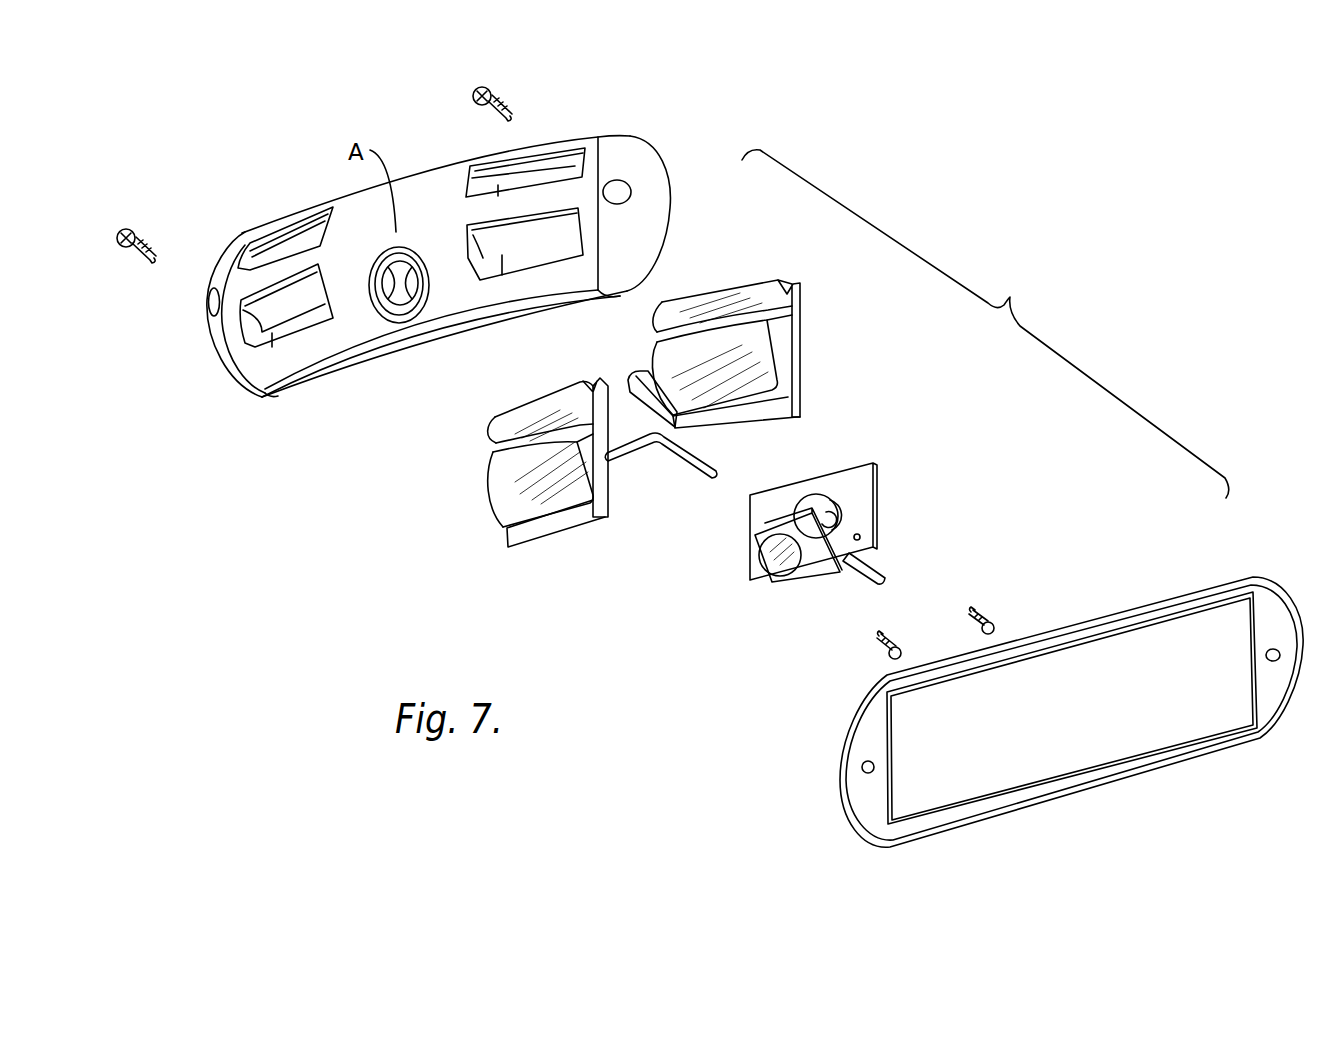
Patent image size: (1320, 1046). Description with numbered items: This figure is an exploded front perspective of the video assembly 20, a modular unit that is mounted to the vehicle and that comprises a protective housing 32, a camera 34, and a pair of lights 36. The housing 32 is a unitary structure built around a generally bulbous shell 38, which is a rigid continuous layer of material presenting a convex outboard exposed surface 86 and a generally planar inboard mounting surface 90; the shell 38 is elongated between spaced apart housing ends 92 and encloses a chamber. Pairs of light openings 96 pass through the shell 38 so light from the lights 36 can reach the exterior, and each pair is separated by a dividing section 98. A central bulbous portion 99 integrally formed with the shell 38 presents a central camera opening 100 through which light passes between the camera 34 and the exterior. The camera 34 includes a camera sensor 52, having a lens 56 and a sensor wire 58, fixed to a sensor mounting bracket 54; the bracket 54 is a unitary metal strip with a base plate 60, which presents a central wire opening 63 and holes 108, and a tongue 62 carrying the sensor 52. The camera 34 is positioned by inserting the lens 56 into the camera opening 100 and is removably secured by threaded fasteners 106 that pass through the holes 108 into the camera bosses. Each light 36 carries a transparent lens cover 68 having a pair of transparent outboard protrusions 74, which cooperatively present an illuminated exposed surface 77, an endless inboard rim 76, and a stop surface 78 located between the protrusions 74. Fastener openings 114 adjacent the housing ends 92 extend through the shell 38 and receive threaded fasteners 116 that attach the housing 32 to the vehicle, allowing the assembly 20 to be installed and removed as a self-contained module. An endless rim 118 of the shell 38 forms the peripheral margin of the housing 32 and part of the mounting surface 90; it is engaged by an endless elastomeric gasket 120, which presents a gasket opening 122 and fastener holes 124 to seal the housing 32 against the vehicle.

The video assembly 20 is at (1028, 249).
The protective housing 32 is at (258, 394).
The camera 34 is at (858, 504).
The lights 36 is at (652, 423).
The shell 38 is at (337, 373).
The camera sensor 52 is at (766, 574).
The sensor mounting bracket 54 is at (866, 472).
The lens 56 is at (765, 556).
The sensor wire 58 is at (885, 579).
The base plate 60 is at (828, 535).
The tongue 62 is at (858, 486).
The central wire opening 63 is at (836, 518).
The transparent lens cover 68 is at (546, 535).
The transparent outboard protrusions 74 is at (637, 383).
The inboard rim 76 is at (585, 535).
The illuminated exposed surface 77 is at (567, 400).
The stop surface 78 is at (504, 455).
The outboard exposed surface 86 is at (676, 201).
The inboard mounting surface 90 is at (667, 177).
The housing ends 92 is at (713, 223).
The light openings 96 is at (286, 232).
The dividing sections 98 is at (262, 277).
The central bulbous portion 99 is at (417, 330).
The central camera opening 100 is at (408, 300).
The threaded fasteners 106 is at (968, 610).
The holes 108 is at (862, 537).
The fastener openings 114 is at (630, 192).
The threaded fasteners 116 is at (126, 232).
The endless rim 118 is at (565, 317).
The endless gasket 120 is at (1071, 701).
The gasket opening 122 is at (1078, 778).
The fastener holes 124 is at (1264, 655).